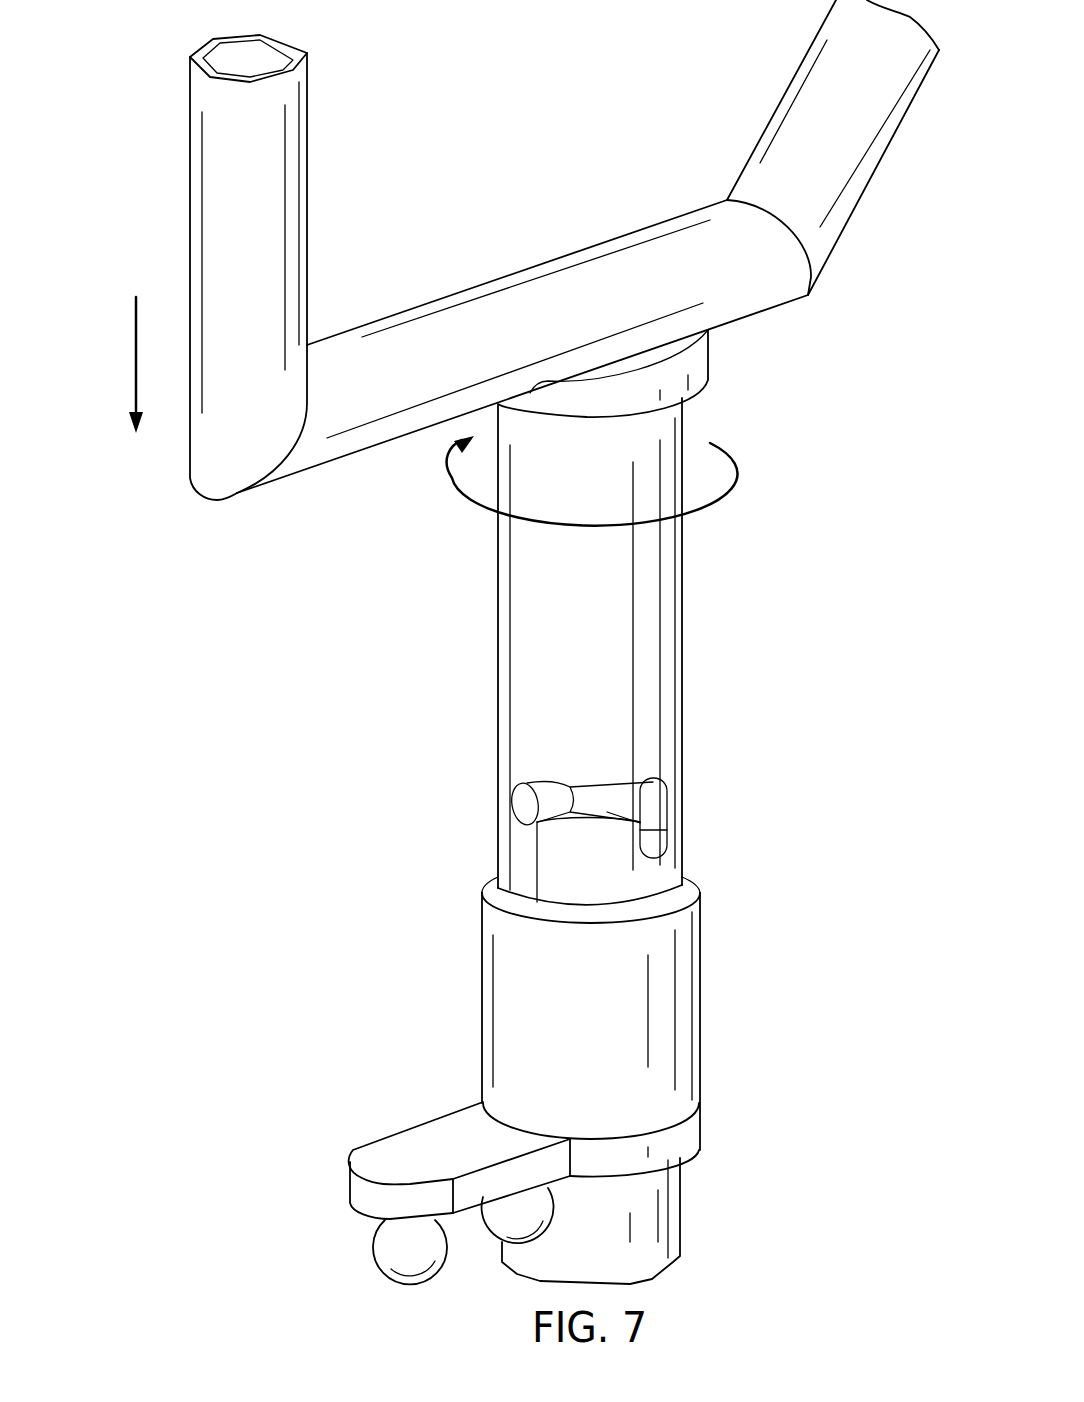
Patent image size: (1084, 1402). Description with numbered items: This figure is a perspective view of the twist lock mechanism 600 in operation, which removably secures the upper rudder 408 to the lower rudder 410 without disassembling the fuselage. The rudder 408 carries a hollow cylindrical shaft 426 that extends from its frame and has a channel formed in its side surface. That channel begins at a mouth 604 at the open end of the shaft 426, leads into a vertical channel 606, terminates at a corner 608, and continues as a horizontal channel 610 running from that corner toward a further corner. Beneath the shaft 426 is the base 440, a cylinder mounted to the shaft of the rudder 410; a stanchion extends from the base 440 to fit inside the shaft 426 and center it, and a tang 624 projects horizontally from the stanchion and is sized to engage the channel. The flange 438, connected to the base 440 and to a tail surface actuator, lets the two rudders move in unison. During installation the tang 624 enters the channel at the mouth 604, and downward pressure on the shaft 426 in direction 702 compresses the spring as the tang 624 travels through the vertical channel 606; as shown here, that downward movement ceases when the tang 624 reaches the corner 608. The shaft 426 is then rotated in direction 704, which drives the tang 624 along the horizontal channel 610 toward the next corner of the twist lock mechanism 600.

The rudder 408 is at (182, 160).
The direction 702 is at (134, 343).
The direction 704 is at (456, 488).
The twist lock mechanism 600 is at (301, 622).
The shaft 426 is at (497, 618).
The horizontal channel 610 is at (600, 802).
The corner 608 is at (520, 782).
The tang 624 is at (512, 806).
The vertical channel 606 is at (525, 855).
The mouth 604 is at (518, 892).
The base 440 is at (515, 1000).
The flange 438 is at (428, 1138).
The rudder 410 is at (682, 1200).